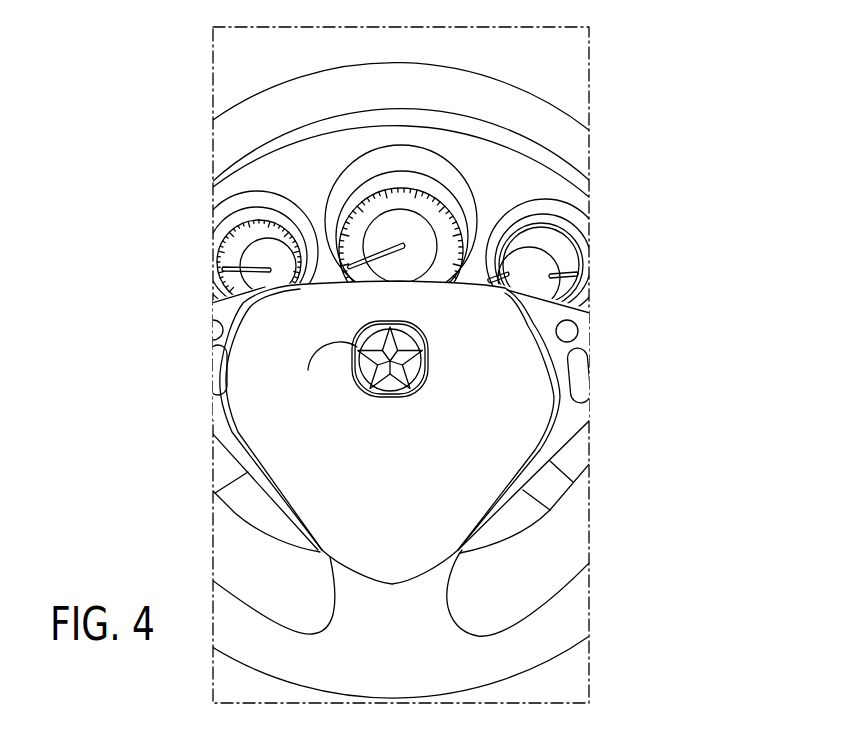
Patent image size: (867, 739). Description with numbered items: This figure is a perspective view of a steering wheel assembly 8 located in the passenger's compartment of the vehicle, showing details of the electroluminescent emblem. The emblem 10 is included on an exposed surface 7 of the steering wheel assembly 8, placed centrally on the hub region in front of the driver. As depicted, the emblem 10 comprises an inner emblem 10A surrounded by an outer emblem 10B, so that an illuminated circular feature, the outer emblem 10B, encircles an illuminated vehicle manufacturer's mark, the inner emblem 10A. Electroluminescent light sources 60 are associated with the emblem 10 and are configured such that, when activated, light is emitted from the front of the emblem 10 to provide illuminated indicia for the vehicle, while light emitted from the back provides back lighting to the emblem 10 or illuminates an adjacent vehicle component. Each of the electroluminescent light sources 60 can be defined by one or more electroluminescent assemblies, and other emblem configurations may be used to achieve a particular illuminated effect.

The exposed surface 7 is at (518, 393).
The steering wheel assembly 8 is at (648, 112).
The emblem 10 is at (416, 385).
The inner emblem 10A is at (390, 398).
The outer emblem 10B is at (432, 361).
The electroluminescent light sources 60 is at (357, 380).